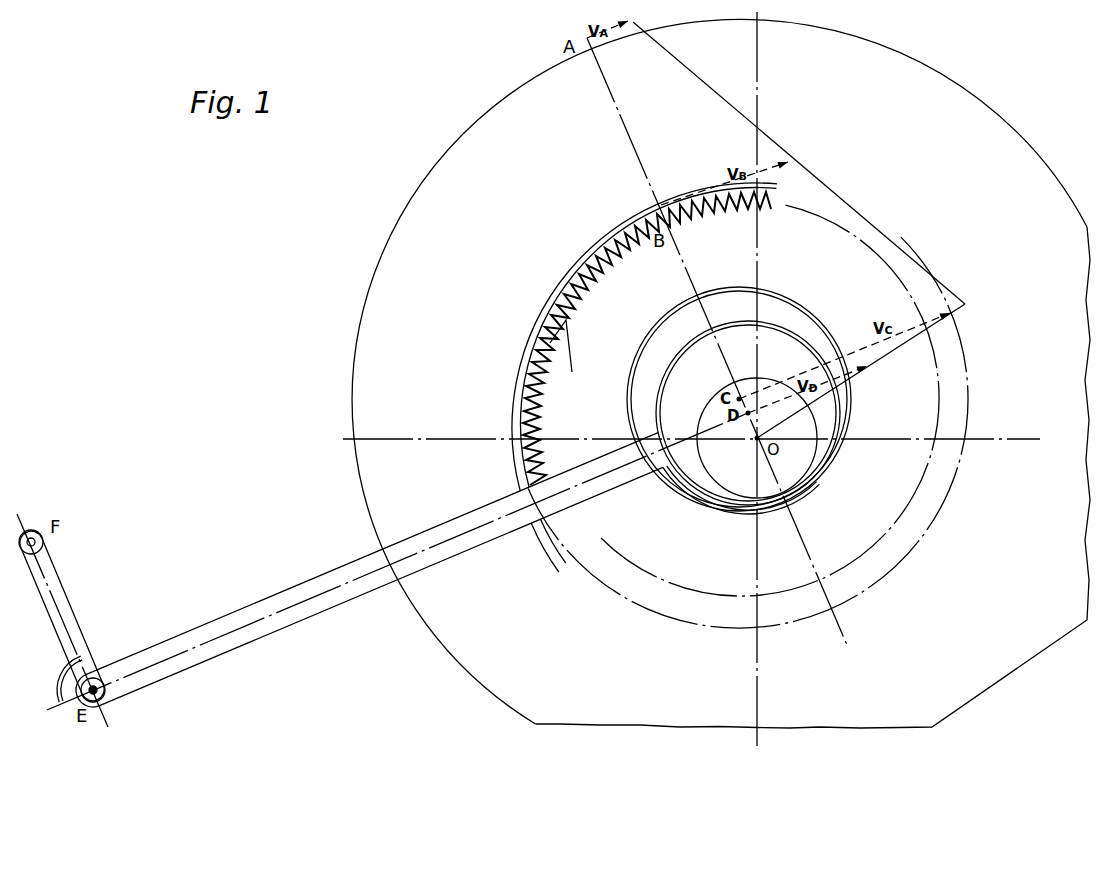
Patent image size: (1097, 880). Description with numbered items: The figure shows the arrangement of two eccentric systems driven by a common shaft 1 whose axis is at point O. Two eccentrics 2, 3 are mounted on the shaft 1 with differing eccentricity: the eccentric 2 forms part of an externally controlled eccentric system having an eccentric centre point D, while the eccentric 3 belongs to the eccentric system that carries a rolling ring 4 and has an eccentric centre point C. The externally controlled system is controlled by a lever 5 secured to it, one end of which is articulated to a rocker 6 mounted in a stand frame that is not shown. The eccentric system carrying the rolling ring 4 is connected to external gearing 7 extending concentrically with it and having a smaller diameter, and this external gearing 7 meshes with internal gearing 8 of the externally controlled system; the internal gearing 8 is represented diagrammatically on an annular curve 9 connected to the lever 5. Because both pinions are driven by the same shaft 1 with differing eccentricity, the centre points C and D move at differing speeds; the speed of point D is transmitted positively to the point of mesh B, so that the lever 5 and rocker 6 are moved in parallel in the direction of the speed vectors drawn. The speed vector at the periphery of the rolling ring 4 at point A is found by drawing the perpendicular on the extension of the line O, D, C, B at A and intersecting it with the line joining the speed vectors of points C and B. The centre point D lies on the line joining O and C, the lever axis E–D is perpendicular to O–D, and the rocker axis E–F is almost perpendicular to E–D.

The shaft 1 is at (793, 461).
The eccentric 2 is at (828, 410).
The eccentric 3 is at (797, 312).
The rolling ring 4 is at (952, 118).
The lever 5 is at (222, 622).
The rocker 6 is at (67, 613).
The external gearing 7 is at (572, 372).
The internal gearing 8 is at (555, 300).
The annular curve 9 is at (567, 263).